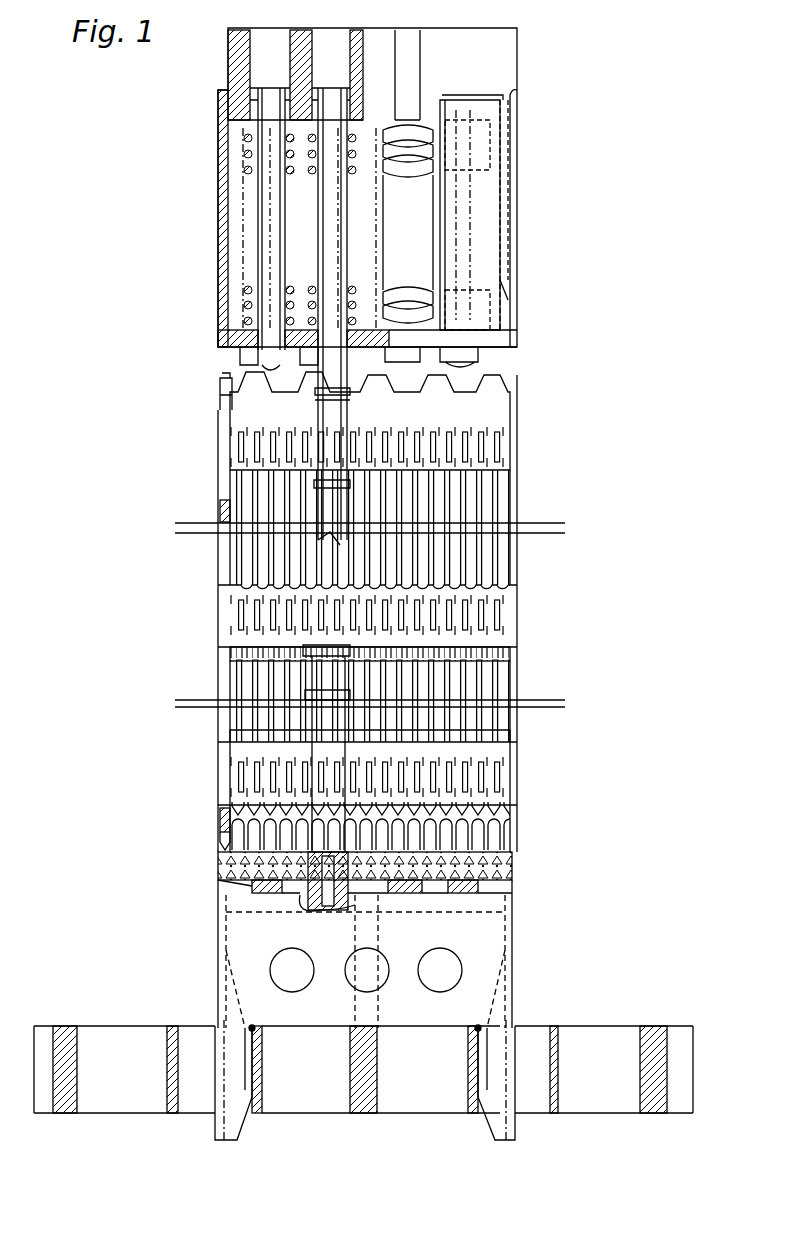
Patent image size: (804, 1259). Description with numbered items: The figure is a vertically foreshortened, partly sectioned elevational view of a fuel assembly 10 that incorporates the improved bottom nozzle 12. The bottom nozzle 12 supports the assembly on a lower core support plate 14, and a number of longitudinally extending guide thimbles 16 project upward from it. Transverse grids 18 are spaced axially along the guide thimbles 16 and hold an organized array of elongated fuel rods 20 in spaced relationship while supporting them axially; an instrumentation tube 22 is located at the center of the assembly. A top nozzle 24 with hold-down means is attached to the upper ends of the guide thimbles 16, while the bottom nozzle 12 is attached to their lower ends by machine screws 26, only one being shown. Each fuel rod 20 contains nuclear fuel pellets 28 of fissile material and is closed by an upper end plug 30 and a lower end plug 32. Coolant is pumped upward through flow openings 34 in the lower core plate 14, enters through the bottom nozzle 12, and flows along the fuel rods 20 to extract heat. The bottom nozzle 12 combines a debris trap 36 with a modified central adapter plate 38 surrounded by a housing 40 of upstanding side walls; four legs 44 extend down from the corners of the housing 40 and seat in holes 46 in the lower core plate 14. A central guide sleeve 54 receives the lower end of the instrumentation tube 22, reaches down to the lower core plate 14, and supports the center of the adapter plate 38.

The fuel assembly 10 is at (614, 368).
The bottom nozzle 12 is at (522, 884).
The lower core support plate 14 is at (653, 1016).
The guide tubes or thimbles 16 is at (322, 400).
The transverse grids 18 is at (510, 418).
The fuel rods 20 is at (232, 557).
The instrumentation tube 22 is at (378, 392).
The top nozzle 24 is at (531, 243).
The machine screws 26 is at (320, 920).
The nuclear fuel pellets 28 is at (222, 514).
The upper end plug 30 is at (222, 392).
The lower end plug 32 is at (222, 838).
The flow openings 34 is at (338, 1020).
The debris trap 36 is at (512, 852).
The central adapter plate 38 is at (518, 912).
The housing 40 is at (218, 955).
The legs 44 is at (205, 1030).
The holes 46 is at (245, 1025).
The central guide sleeve 54 is at (380, 968).